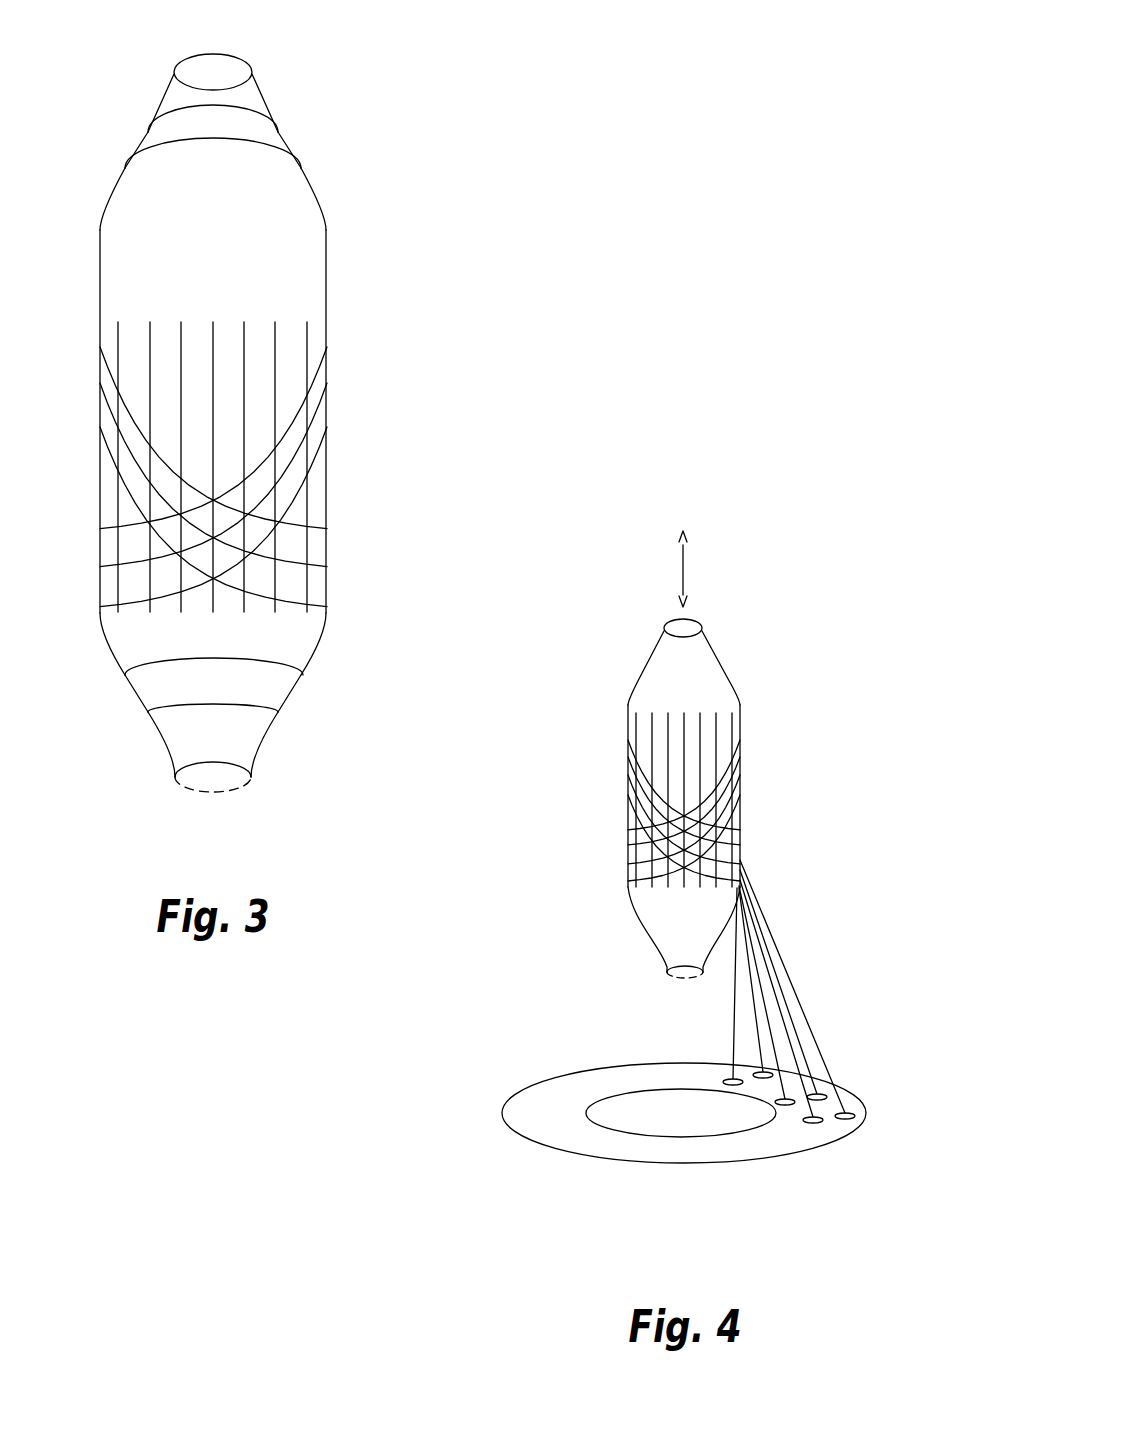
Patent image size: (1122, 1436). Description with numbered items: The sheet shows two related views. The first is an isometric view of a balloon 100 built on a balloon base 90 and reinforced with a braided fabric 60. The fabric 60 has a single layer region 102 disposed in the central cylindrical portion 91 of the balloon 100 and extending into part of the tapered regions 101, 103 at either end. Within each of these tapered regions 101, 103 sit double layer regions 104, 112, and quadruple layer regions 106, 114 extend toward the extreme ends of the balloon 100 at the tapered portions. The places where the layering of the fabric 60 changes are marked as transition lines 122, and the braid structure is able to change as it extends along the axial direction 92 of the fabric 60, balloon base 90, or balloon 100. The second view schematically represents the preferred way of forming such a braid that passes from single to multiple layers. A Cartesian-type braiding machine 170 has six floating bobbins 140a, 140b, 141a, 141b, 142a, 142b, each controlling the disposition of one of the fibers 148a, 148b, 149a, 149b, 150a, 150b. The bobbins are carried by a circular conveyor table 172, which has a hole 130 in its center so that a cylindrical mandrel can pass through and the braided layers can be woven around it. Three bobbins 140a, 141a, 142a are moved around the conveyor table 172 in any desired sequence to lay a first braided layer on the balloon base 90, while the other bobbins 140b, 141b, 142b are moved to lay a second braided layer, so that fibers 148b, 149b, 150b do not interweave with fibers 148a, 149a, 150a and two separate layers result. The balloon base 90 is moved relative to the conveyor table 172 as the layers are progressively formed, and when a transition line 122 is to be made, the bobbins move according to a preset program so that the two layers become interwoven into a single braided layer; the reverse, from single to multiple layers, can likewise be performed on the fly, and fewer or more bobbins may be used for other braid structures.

In FIG. 3, the fabric 60 is at (333, 260).
In FIG. 4, the fabric 60 is at (767, 775).
In FIG. 3, the balloon base 90 is at (202, 66).
In FIG. 4, the balloon base 90 is at (663, 922).
In FIG. 3, the central cylindrical portion 91 is at (367, 407).
In FIG. 4, the axial direction 92 is at (683, 567).
In FIG. 3, the balloon 100 is at (392, 342).
In FIG. 4, the balloon 100 is at (773, 687).
In FIG. 3, the tapered region 101 is at (313, 54).
In FIG. 3, the single layer region 102 is at (330, 583).
In FIG. 3, the tapered region 103 is at (303, 705).
In FIG. 3, the double layer region 104 is at (303, 678).
In FIG. 3, the quadruple layer region 106 is at (267, 742).
In FIG. 3, the double layer region 112 is at (292, 152).
In FIG. 3, the quadruple layer region 114 is at (270, 103).
In FIG. 3, the transition line 122 is at (148, 127).
In FIG. 4, the hole 130 is at (618, 1125).
In FIG. 4, the floating bobbin 140a is at (773, 1070).
In FIG. 4, the floating bobbin 140b is at (720, 1082).
In FIG. 4, the floating bobbin 141a is at (826, 1094).
In FIG. 4, the floating bobbin 141b is at (787, 1108).
In FIG. 4, the floating bobbin 142a is at (857, 1115).
In FIG. 4, the floating bobbin 142b is at (820, 1125).
In FIG. 4, the fiber 148a is at (755, 1030).
In FIG. 4, the fiber 148b is at (730, 1002).
In FIG. 4, the fiber 149a is at (775, 972).
In FIG. 4, the fiber 149b is at (760, 1038).
In FIG. 4, the fiber 150a is at (765, 922).
In FIG. 4, the fiber 150b is at (798, 1112).
In FIG. 4, the braiding machine 170 is at (623, 1208).
In FIG. 4, the conveyor table 172 is at (502, 1100).